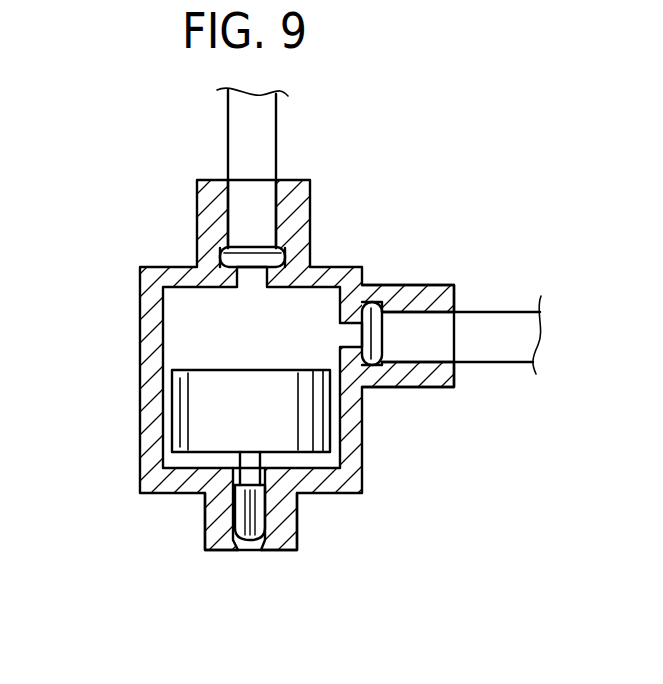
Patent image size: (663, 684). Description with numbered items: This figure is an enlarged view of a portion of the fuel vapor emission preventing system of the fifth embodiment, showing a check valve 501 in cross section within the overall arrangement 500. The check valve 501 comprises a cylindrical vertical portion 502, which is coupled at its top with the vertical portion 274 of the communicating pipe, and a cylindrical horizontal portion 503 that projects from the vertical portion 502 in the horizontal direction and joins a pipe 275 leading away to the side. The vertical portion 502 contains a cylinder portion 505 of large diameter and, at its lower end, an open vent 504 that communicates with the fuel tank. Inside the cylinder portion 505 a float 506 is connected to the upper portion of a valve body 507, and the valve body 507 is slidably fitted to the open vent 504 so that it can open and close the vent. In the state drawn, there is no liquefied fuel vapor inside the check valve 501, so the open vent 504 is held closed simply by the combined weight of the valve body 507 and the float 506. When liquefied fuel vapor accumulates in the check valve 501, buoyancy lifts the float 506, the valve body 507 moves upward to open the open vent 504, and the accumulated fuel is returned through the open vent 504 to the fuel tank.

The check valve assembly 500 is at (503, 167).
The check valve 501 is at (455, 286).
The cylindrical vertical portion 502 is at (148, 319).
The cylindrical horizontal portion 503 is at (425, 285).
The open vent 504 is at (250, 545).
The cylinder portion 505 is at (301, 306).
The float 506 is at (185, 415).
The valve body 507 is at (250, 505).
The vertical portion 274 is at (238, 140).
The outlet pipe 275 is at (510, 345).